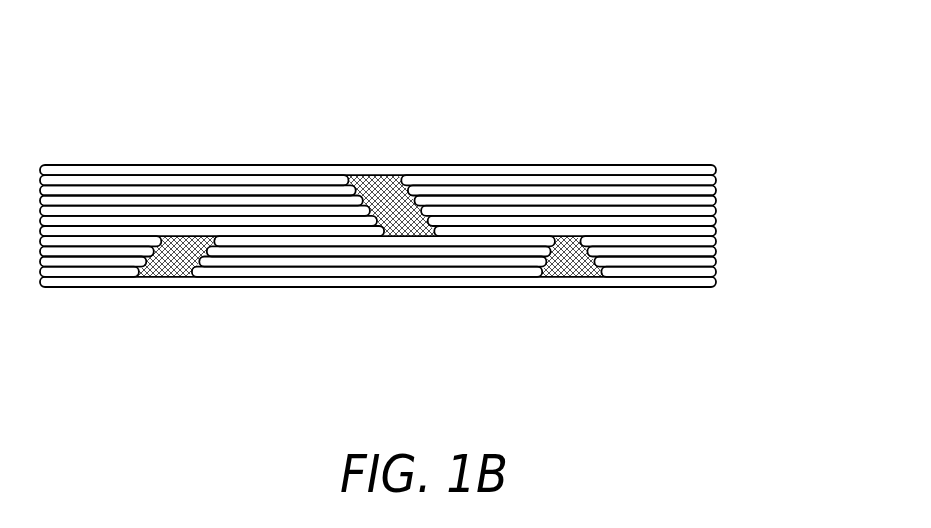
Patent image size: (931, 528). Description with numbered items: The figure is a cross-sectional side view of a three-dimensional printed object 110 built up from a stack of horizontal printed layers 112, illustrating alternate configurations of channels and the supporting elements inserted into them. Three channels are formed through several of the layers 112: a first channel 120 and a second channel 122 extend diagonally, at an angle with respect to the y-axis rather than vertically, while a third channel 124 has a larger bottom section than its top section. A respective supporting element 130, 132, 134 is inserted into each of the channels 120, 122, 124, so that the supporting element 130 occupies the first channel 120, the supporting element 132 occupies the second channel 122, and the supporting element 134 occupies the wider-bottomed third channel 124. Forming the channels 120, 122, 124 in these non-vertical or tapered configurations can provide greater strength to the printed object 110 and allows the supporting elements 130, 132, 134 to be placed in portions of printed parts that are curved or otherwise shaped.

The 3D printed object 110 is at (150, 70).
The plurality of plies 112 is at (716, 166).
The first channel 120 is at (182, 234).
The second channel 122 is at (410, 228).
The third channel 124 is at (570, 238).
The supporting element 130 is at (192, 233).
The supporting element 132 is at (367, 170).
The supporting element 134 is at (568, 233).